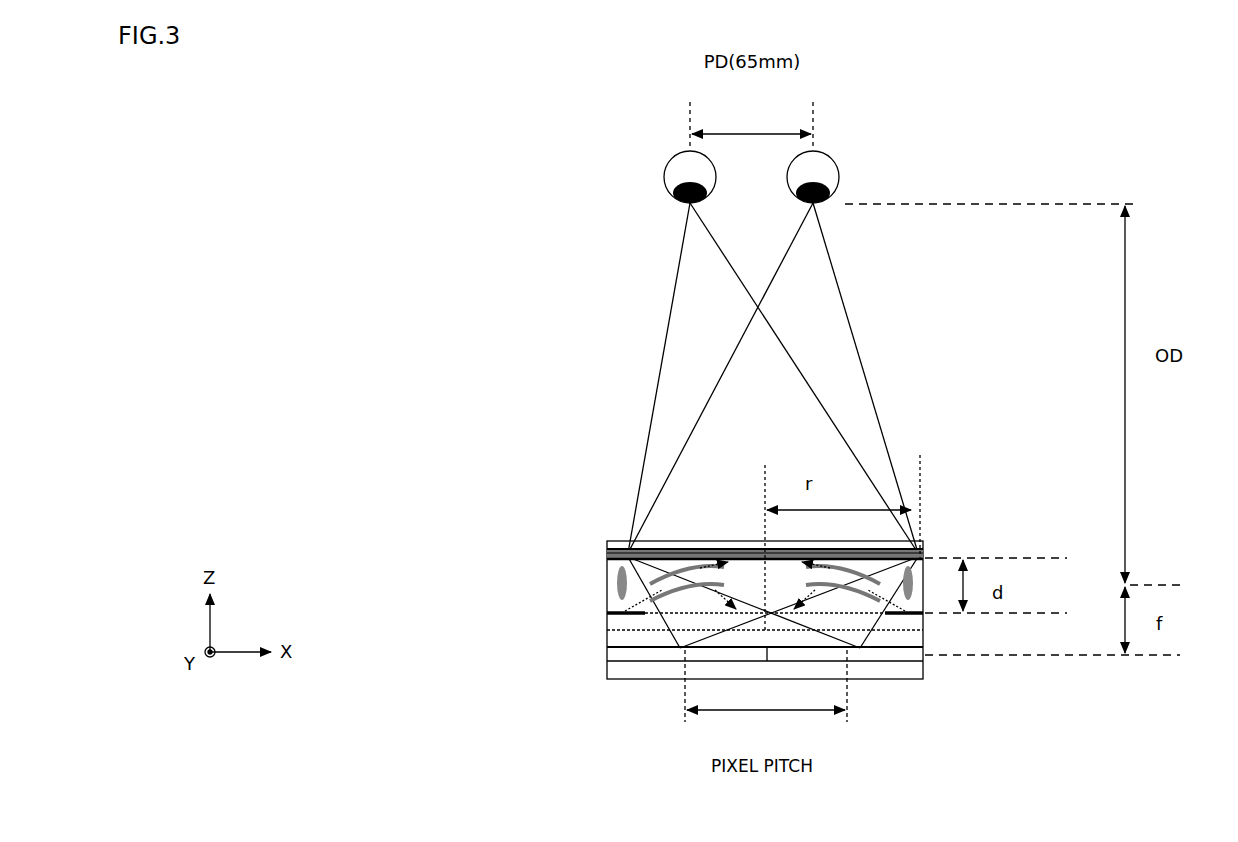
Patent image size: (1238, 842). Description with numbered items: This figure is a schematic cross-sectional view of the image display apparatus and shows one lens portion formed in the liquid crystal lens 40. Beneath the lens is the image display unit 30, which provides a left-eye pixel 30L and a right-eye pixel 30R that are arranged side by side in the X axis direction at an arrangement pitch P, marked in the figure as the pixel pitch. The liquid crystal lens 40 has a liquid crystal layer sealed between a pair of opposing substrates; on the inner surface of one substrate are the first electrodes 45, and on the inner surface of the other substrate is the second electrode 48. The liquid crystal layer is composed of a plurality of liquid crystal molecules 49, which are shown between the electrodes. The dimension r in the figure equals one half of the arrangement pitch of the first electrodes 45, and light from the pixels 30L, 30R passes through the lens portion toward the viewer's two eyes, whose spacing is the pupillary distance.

The image display unit 30 is at (607, 655).
The left-eye pixel 30L is at (638, 655).
The right-eye pixel 30R is at (887, 655).
The liquid crystal lens 40 is at (607, 592).
The first electrode 45 is at (607, 613).
The second electrode 48 is at (620, 552).
The liquid crystal molecules 49 is at (750, 563).